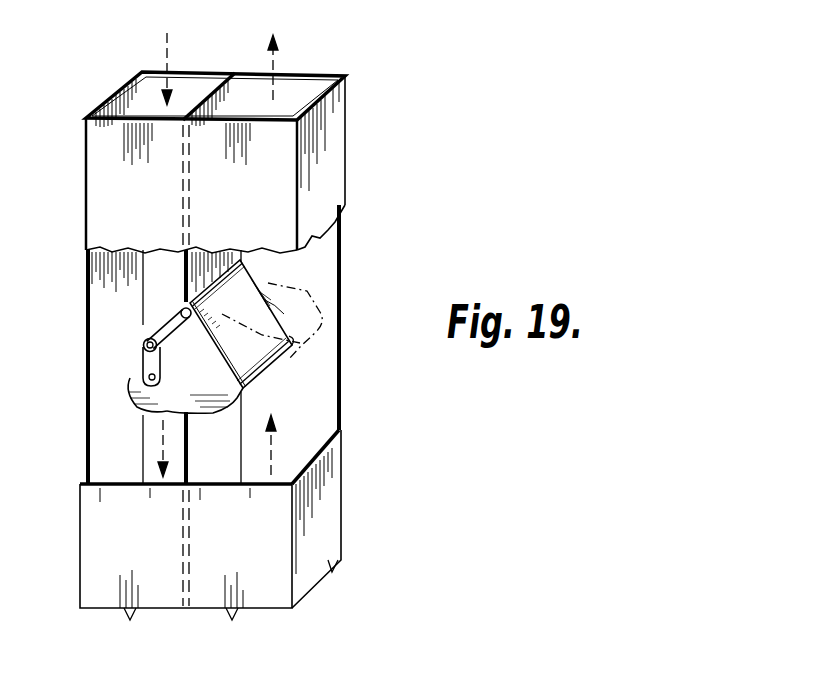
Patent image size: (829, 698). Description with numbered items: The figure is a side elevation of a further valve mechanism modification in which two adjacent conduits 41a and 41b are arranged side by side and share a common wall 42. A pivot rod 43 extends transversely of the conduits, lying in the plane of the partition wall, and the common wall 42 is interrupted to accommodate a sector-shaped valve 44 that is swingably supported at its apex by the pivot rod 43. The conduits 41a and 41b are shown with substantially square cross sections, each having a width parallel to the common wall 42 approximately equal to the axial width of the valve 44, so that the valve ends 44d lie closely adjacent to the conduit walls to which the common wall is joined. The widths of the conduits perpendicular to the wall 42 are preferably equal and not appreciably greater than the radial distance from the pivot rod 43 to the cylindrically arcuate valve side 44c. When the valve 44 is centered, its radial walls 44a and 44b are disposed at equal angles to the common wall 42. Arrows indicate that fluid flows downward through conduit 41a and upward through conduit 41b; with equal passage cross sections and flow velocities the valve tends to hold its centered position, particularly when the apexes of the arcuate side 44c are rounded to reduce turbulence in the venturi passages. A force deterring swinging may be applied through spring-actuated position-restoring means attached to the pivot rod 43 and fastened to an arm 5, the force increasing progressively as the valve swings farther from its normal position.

The conduit 41a is at (190, 80).
The conduit 41b is at (300, 86).
The common wall 42 is at (236, 84).
The sector-shaped valve 44 is at (282, 308).
The radial wall 44a is at (129, 377).
The radial wall 44b is at (292, 357).
The arcuate valve side 44c is at (160, 418).
The valve ends 44d is at (313, 328).
The pivot rod 43 is at (143, 343).
The arm 5 is at (143, 356).